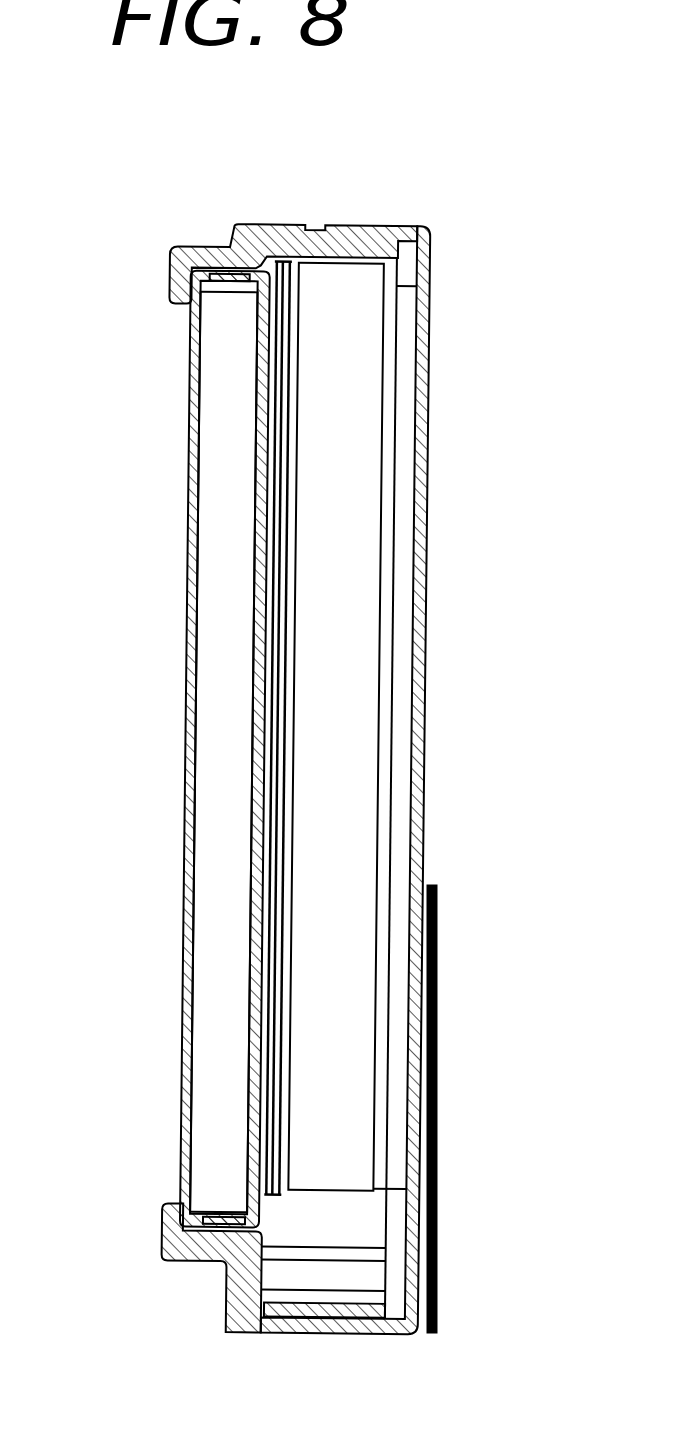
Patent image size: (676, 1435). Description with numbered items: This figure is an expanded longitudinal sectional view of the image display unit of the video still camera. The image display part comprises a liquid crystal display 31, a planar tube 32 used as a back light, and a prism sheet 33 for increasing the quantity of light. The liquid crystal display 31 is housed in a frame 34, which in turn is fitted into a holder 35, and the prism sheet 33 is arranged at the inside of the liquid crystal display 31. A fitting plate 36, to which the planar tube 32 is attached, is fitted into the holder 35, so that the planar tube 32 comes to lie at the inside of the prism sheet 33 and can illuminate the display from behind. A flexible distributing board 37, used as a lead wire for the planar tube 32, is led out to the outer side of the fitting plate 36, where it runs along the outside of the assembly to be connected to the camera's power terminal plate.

The liquid crystal display 31 is at (230, 560).
The planar tube 32 is at (335, 712).
The prism sheet 33 is at (265, 745).
The frame 34 is at (188, 333).
The holder 35 is at (268, 232).
The fitting plate 36 is at (427, 550).
The flexible distributing board 37 is at (437, 998).